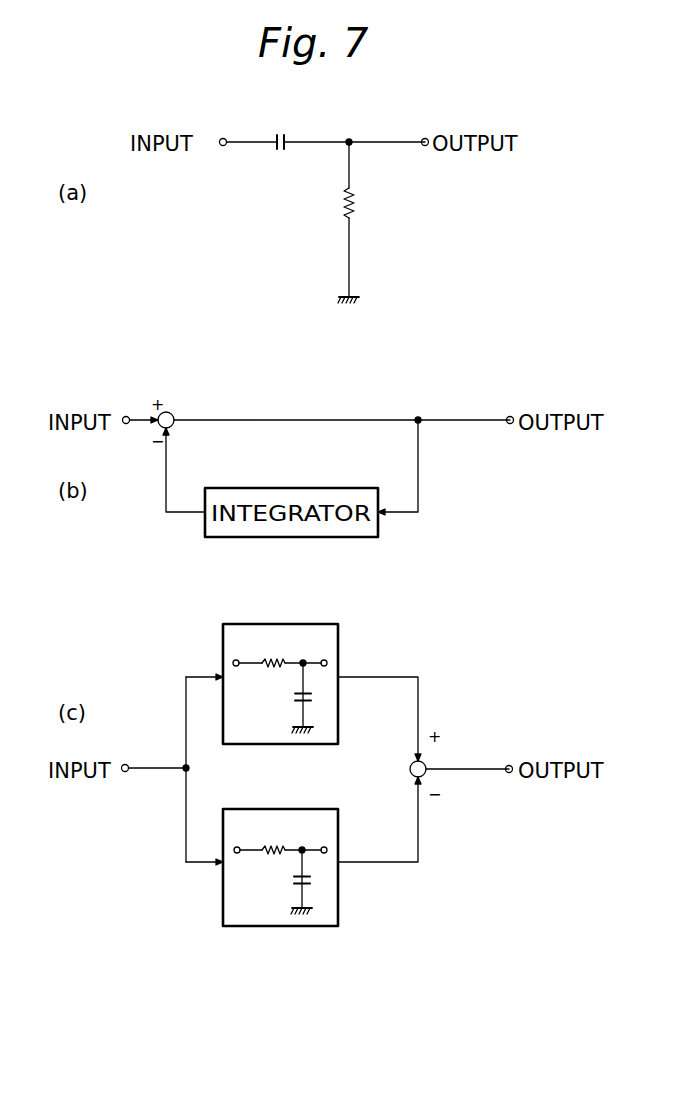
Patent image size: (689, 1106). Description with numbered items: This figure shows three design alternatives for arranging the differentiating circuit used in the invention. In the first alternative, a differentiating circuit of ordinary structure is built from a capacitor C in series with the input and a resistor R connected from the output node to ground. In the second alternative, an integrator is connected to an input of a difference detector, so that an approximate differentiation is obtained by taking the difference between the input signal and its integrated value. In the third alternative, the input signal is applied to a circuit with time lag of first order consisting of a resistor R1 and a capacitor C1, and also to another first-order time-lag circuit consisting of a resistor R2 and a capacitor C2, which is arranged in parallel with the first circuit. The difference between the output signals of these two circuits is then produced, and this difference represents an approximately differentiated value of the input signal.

The capacitor C is at (280, 154).
The resistor R is at (360, 203).
The resistor R1 is at (276, 649).
The capacitor C1 is at (291, 706).
The resistor R2 is at (276, 835).
The capacitor C2 is at (287, 889).